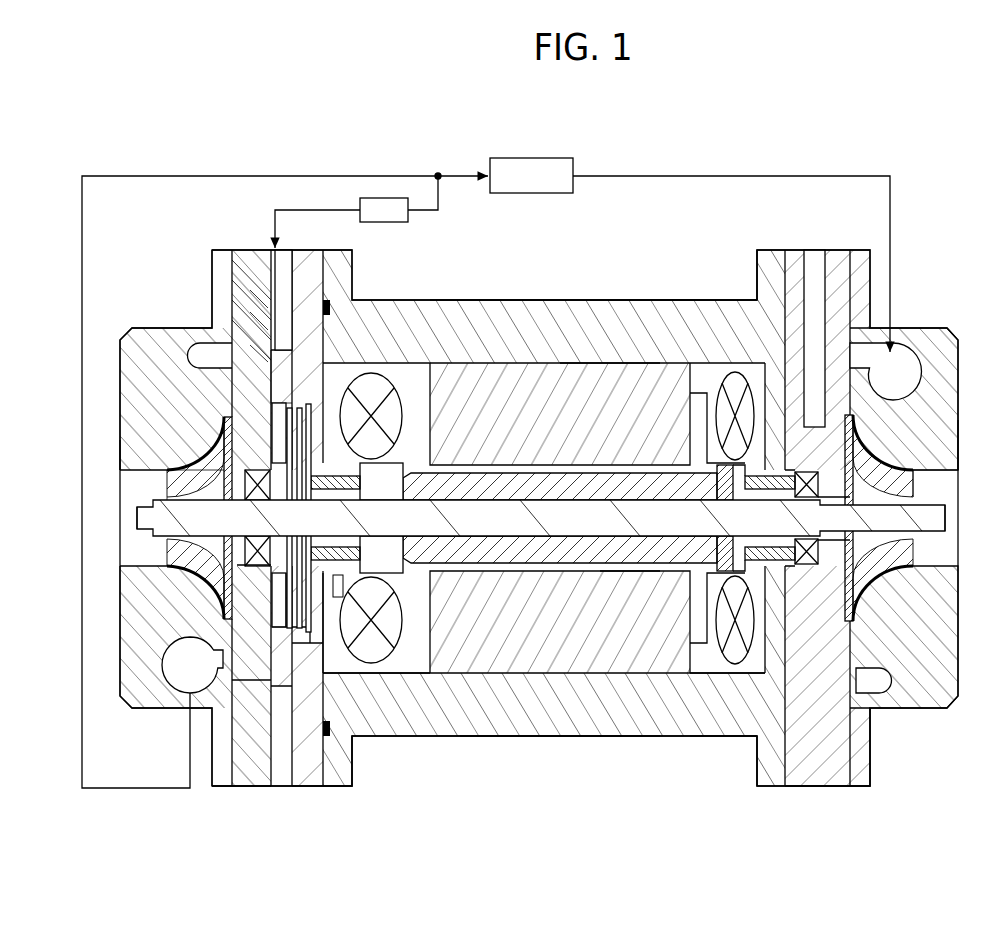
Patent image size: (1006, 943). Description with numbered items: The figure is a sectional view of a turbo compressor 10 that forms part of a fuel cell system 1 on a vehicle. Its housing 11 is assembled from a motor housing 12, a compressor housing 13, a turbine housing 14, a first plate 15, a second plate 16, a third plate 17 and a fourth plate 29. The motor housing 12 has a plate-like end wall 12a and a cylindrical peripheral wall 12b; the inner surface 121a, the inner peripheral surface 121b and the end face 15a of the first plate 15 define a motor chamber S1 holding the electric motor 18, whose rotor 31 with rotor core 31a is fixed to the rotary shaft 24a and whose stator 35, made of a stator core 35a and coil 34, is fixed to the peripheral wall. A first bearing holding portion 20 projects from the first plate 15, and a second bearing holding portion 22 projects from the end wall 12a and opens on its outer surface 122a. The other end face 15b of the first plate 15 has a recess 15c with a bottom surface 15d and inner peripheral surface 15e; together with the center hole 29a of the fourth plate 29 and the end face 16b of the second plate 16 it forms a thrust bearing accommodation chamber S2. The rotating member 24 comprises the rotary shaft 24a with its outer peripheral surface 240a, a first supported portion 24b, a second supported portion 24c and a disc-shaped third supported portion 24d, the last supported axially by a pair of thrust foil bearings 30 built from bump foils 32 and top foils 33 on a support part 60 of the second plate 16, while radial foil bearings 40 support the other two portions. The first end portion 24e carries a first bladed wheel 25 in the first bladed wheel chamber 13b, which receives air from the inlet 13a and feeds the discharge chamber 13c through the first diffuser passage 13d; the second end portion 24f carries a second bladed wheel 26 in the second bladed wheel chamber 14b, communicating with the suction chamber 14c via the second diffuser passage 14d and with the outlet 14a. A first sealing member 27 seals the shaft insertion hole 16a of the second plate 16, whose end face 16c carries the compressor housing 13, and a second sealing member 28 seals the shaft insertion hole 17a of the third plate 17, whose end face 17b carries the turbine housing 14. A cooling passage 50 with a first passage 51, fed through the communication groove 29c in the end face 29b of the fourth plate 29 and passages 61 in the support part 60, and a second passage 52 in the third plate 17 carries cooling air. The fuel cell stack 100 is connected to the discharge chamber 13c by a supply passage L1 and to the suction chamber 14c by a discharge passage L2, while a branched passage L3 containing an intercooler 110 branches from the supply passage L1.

The fuel cell system 1 is at (906, 214).
The turbo compressor 10 is at (645, 285).
The housing 11 is at (563, 296).
The motor housing 12 is at (500, 299).
The end wall 12a is at (768, 262).
The peripheral wall 12b is at (690, 299).
The compressor housing 13 is at (150, 340).
The inlet 13a is at (135, 471).
The first bladed wheel chamber 13b is at (175, 495).
The discharge chamber 13c is at (176, 675).
The first diffuser passage 13d is at (200, 636).
The turbine housing 14 is at (920, 329).
The outlet 14a is at (935, 472).
The second bladed wheel chamber 14b is at (877, 492).
The suction chamber 14c is at (882, 386).
The second diffuser passage 14d is at (862, 401).
The first plate 15 is at (298, 262).
The end face 15a is at (350, 750).
The end face 15b is at (318, 787).
The recess 15c is at (282, 386).
The bottom surface 15d is at (296, 656).
The inner peripheral surface 15e is at (251, 695).
The second plate 16 is at (252, 250).
The shaft insertion hole 16a is at (253, 591).
The end face 16b is at (240, 787).
The end face 16c is at (222, 787).
The third plate 17 is at (830, 262).
The shaft insertion hole 17a is at (835, 562).
The end face 17b is at (870, 770).
The electric motor 18 is at (605, 357).
The first bearing holding portion 20 is at (320, 578).
The second bearing holding portion 22 is at (705, 566).
The rotating member 24 is at (485, 545).
The rotary shaft 24a is at (545, 565).
The first supported portion 24b is at (381, 481).
The second supported portion 24c is at (696, 574).
The third supported portion 24d is at (332, 490).
The first end portion 24e is at (135, 516).
The second end portion 24f is at (947, 518).
The first bladed wheel 25 is at (220, 541).
The second bladed wheel 26 is at (863, 552).
The first sealing member 27 is at (264, 518).
The second sealing member 28 is at (806, 518).
The fourth plate 29 is at (262, 788).
The center hole 29a is at (262, 345).
The end face 29b is at (262, 312).
The communication groove 29c is at (262, 292).
The thrust foil bearing 30 is at (278, 455).
The rotor 31 is at (598, 575).
The rotor core 31a is at (618, 575).
The bump foil 32 is at (274, 612).
The top foil 33 is at (278, 630).
The coil 34 is at (378, 662).
The stator 35 is at (590, 710).
The stator core 35a is at (520, 710).
The radial foil bearing 40 is at (728, 480).
The cooling passage 50 is at (266, 258).
The first passage 51 is at (238, 272).
The second passage 52 is at (812, 262).
The support part 60 is at (294, 518).
The passage 61 is at (274, 412).
The fuel cell stack 100 is at (574, 165).
The intercooler 110 is at (396, 223).
The inner surface 121a is at (762, 750).
The inner peripheral surface 121b is at (735, 722).
The outer surface 122a is at (810, 781).
The outer peripheral surface 240a is at (550, 490).
The supply passage L1 is at (292, 176).
The discharge passage L2 is at (681, 176).
The branched passage L3 is at (439, 214).
The motor chamber S1 is at (418, 676).
The thrust bearing accommodation chamber S2 is at (371, 416).